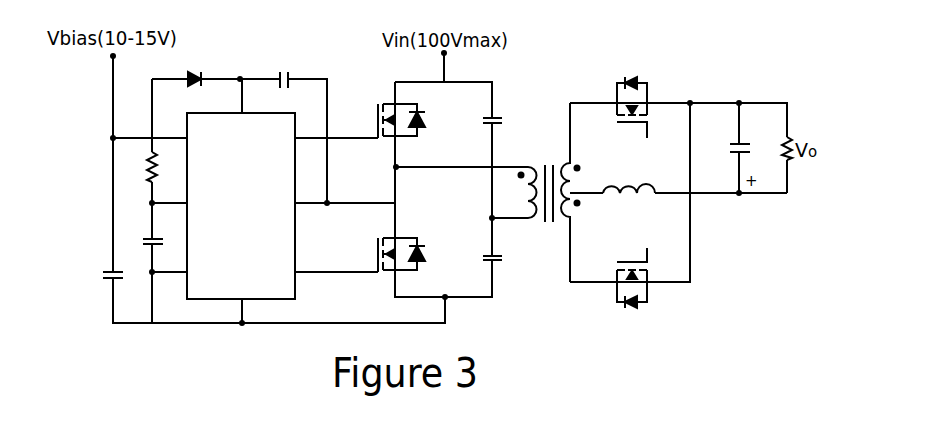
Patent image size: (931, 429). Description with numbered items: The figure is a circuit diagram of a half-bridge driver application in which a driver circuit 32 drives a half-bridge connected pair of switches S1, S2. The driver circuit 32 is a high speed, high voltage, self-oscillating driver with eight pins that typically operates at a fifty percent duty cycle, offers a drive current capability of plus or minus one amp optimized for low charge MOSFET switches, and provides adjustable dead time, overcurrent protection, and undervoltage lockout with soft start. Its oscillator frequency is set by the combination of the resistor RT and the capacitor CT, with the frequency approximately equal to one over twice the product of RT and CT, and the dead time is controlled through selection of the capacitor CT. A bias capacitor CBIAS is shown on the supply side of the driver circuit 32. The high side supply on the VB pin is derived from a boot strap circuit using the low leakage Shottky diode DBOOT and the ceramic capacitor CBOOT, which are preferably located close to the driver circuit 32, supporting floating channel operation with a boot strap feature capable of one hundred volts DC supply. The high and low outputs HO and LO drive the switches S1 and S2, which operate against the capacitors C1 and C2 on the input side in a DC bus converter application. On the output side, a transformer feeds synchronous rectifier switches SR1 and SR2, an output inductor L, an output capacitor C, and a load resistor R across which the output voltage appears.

The driver circuit 32 is at (254, 257).
The switch S1 is at (389, 121).
The switch S2 is at (389, 255).
The capacitor C1 is at (482, 258).
The capacitor C2 is at (482, 123).
The synchronous rectifier SR1 is at (631, 113).
The synchronous rectifier SR2 is at (631, 273).
The output inductor L is at (629, 176).
The output capacitor C is at (734, 150).
The load resistor R is at (778, 149).
The resistor RT is at (138, 167).
The capacitor CT is at (141, 229).
The bias capacitor CBIAS is at (93, 264).
The capacitor C boot CBOOT is at (282, 66).
The diode D boot DBOOT is at (195, 68).